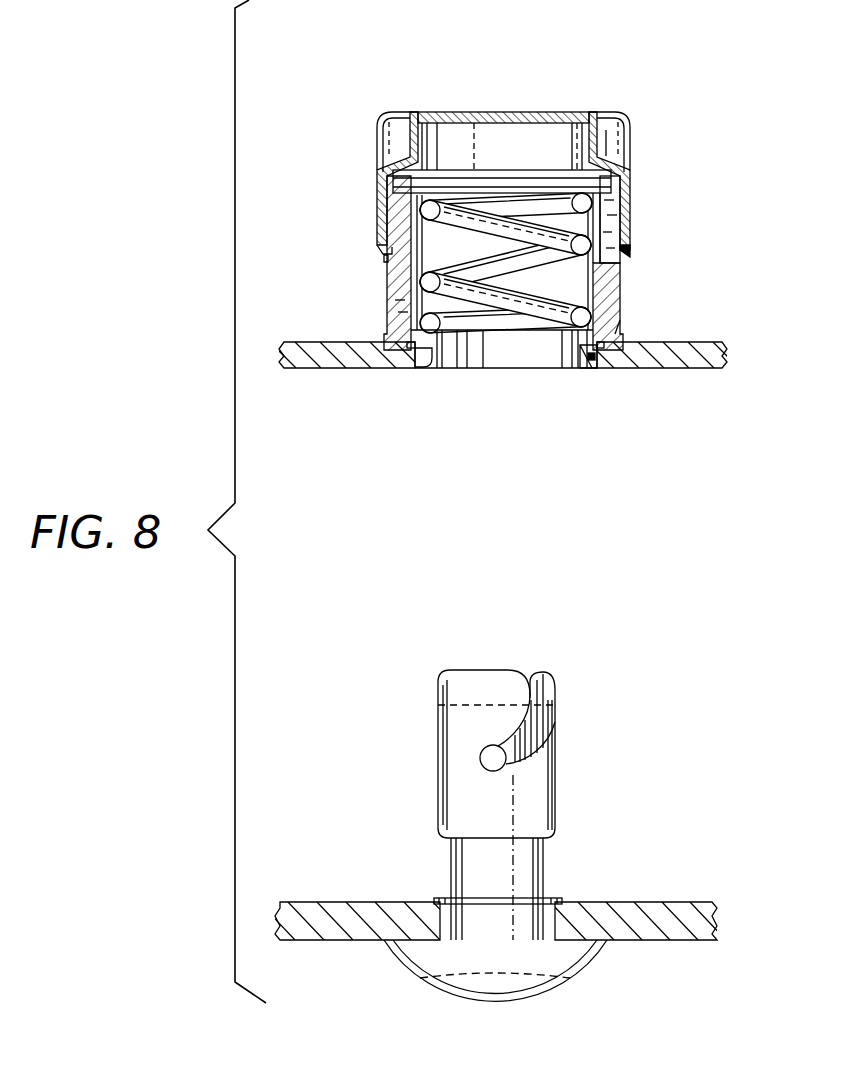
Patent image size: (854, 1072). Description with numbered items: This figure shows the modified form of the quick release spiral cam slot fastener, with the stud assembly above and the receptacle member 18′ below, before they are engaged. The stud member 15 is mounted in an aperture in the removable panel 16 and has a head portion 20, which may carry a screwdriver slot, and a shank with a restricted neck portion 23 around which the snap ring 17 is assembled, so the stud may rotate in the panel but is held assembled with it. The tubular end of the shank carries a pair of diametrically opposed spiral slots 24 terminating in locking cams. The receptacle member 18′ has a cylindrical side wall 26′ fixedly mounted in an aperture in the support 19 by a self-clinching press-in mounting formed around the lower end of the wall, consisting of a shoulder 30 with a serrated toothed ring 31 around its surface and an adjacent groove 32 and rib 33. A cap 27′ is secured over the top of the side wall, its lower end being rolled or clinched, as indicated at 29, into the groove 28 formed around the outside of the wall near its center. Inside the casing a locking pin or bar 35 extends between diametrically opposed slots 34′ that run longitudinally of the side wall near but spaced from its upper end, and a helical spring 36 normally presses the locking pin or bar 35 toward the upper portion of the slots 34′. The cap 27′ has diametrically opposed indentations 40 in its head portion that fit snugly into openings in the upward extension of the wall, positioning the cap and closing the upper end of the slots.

The cap 27′ is at (528, 112).
The indentations 40 is at (607, 143).
The locking pin or bar 35 is at (513, 185).
The slots 34′ is at (612, 206).
The rolled or clinched lower end of cap 29 is at (379, 240).
The groove 28 is at (386, 258).
The helical spring 36 is at (423, 278).
The receptacle member 18′ is at (645, 262).
The cylindrical side wall 26′ is at (622, 305).
The shoulder 30 is at (622, 337).
The support 19 is at (693, 348).
The groove 32 is at (427, 360).
The rib 33 is at (583, 370).
The serrated toothed ring 31 is at (600, 362).
The stud member 15 is at (572, 768).
The spiral slots 24 is at (540, 715).
The restricted neck portion 23 is at (470, 853).
The snap ring 17 is at (550, 897).
The removable panel 16 is at (647, 912).
The head portion 20 is at (425, 957).